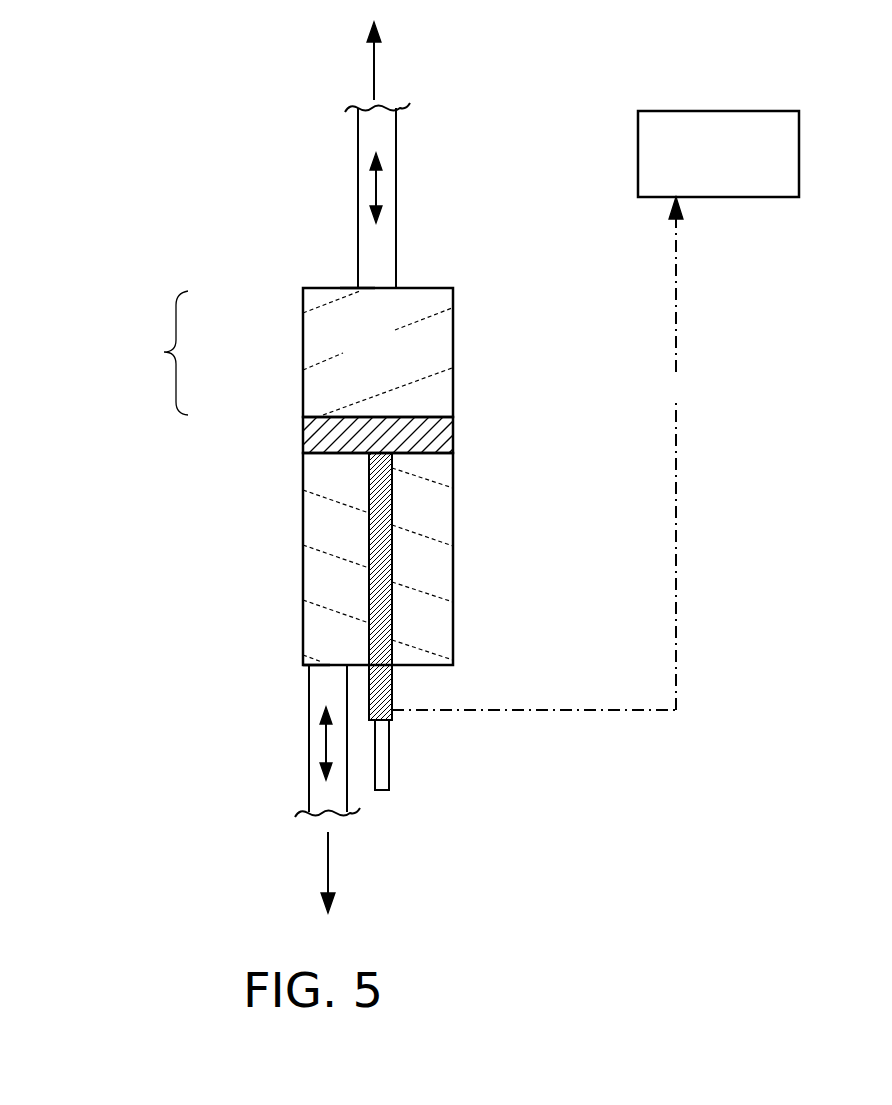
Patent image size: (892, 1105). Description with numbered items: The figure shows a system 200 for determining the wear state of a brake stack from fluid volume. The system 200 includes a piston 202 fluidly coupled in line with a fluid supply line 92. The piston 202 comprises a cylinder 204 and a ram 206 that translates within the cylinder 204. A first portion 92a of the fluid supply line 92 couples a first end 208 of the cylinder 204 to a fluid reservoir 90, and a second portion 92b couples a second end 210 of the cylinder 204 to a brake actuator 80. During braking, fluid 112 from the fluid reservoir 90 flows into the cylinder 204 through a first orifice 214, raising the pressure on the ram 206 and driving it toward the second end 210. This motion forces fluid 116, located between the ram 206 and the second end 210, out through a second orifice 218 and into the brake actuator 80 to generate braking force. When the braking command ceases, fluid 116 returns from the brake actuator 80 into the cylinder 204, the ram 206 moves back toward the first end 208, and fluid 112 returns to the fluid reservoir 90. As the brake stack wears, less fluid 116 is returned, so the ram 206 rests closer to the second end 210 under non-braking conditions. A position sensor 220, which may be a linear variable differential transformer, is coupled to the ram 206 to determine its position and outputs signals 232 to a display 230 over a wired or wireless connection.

The system 200 is at (123, 142).
The fluid reservoir 90 is at (374, 50).
The fluid supply line 92 is at (356, 135).
The first portion 92a is at (357, 177).
The second portion 92b is at (309, 790).
The fluid 112 is at (377, 188).
The fluid 116 is at (326, 742).
The first orifice 214 is at (356, 287).
The first end 208 is at (437, 292).
The piston 202 is at (164, 353).
The cylinder 204 is at (303, 358).
The ram 206 is at (303, 435).
The second end 210 is at (432, 665).
The second orifice 218 is at (306, 668).
The position sensor 220 is at (382, 712).
The brake actuator 80 is at (328, 889).
The display 230 is at (718, 154).
The signals 232 is at (544, 453).